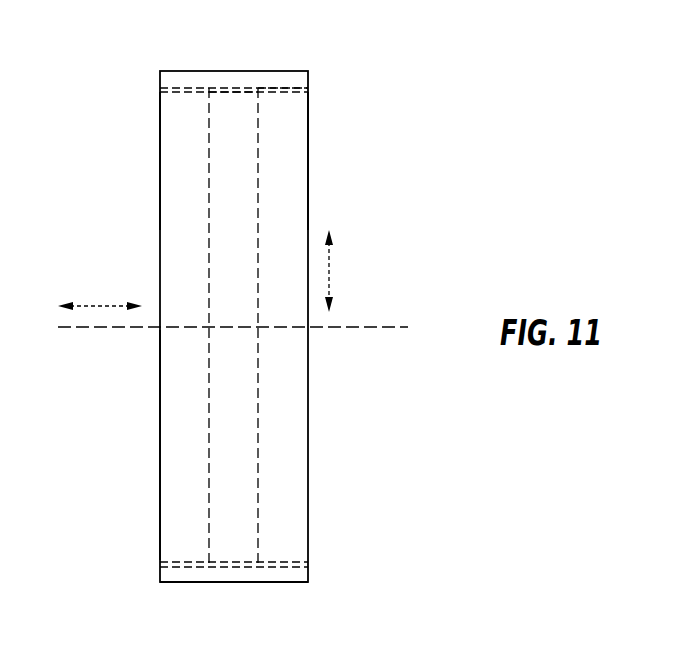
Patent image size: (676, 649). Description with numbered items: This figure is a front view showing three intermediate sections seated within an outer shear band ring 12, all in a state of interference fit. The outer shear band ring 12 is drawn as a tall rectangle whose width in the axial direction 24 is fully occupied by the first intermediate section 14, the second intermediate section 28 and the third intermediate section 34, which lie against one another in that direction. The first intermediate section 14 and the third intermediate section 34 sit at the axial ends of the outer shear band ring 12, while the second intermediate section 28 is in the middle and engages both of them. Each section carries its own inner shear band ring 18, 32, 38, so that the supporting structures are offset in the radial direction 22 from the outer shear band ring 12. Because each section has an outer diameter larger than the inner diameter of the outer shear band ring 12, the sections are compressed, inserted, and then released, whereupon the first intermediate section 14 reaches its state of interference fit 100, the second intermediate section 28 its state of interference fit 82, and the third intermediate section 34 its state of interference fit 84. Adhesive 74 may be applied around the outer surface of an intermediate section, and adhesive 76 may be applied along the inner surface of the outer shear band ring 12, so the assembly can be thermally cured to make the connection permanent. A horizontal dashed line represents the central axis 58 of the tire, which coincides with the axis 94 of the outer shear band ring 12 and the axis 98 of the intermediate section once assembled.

The outer shear band ring 12 is at (180, 70).
The inner shear band ring 32 is at (233, 82).
The adhesive 76 is at (268, 562).
The state of interference fit 100 is at (180, 122).
The second intermediate section 28 is at (243, 136).
The state of interference fit 82 is at (250, 168).
The third intermediate section 34 is at (298, 180).
The state of interference fit 84 is at (300, 210).
The adhesive 74 is at (175, 172).
The axial direction 24 is at (100, 304).
The radial direction 22 is at (330, 271).
The first intermediate section 14 is at (173, 363).
The central axis 58 is at (247, 365).
The axis 94 is at (247, 365).
The axis 98 is at (366, 327).
The inner shear band ring 18 is at (190, 571).
The inner shear band ring 38 is at (287, 570).